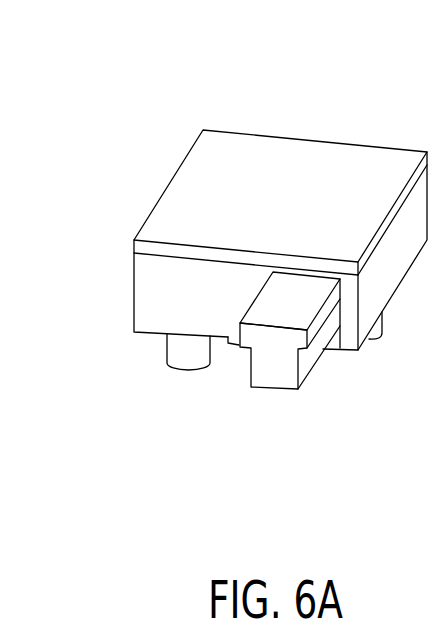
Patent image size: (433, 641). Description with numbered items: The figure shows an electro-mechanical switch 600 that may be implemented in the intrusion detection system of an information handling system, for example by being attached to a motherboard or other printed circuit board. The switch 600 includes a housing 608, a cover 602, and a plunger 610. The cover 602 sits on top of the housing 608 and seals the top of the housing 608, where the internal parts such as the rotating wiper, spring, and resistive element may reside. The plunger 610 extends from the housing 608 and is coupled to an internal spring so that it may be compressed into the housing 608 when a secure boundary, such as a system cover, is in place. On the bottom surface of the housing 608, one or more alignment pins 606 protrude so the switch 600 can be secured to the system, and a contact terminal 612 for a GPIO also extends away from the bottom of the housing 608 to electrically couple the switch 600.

The electro-mechanical switch 600 is at (102, 100).
The cover 602 is at (278, 162).
The housing 608 is at (162, 272).
The alignment pin 606 is at (163, 358).
The contact terminal 612 is at (231, 360).
The plunger 610 is at (316, 378).